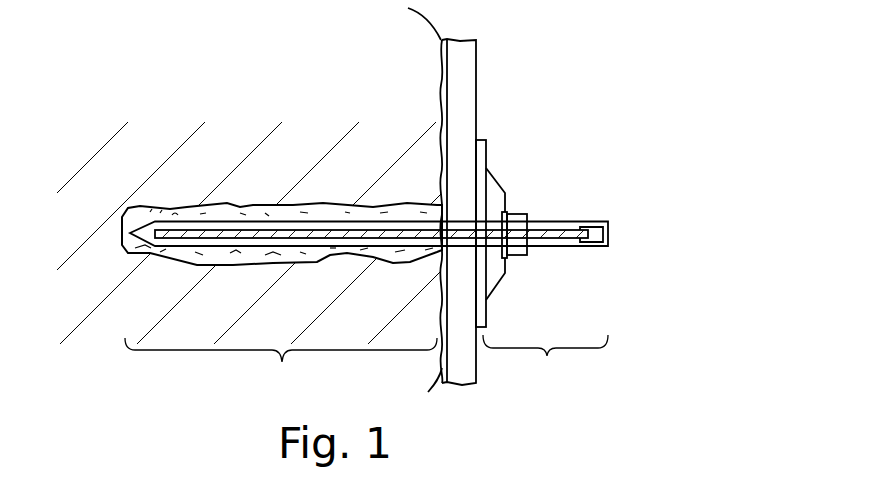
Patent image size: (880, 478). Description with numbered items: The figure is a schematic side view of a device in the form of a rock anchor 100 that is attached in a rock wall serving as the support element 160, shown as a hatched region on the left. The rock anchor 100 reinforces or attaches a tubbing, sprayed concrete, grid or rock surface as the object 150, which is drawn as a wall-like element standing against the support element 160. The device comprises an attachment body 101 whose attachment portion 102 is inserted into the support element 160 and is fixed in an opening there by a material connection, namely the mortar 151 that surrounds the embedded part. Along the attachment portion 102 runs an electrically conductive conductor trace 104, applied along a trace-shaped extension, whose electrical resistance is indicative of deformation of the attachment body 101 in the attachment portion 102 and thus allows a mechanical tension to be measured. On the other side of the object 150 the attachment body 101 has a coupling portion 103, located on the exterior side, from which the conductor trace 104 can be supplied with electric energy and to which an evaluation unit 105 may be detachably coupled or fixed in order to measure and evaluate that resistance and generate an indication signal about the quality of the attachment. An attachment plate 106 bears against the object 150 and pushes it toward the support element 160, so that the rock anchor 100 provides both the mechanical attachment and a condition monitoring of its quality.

The rock anchor 100 is at (617, 90).
The attachment body 101 is at (563, 222).
The attachment portion 102 is at (281, 367).
The coupling portion 103 is at (545, 363).
The conductor trace 104 is at (297, 237).
The evaluation unit 105 is at (712, 192).
The attachment plate 106 is at (486, 160).
The object 150 is at (477, 62).
The mortar 151 is at (247, 208).
The support element 160 is at (97, 379).